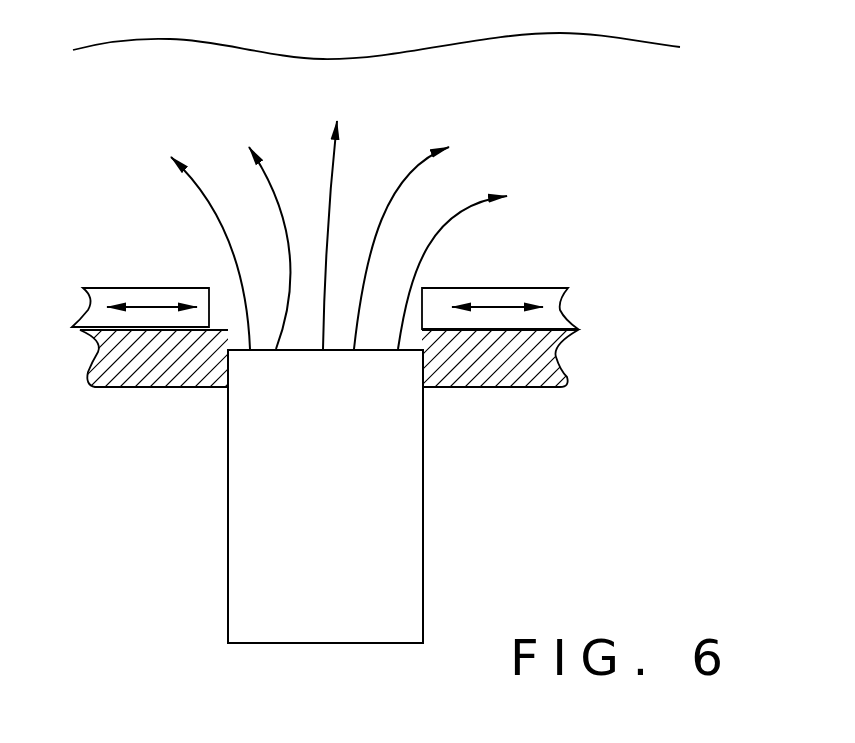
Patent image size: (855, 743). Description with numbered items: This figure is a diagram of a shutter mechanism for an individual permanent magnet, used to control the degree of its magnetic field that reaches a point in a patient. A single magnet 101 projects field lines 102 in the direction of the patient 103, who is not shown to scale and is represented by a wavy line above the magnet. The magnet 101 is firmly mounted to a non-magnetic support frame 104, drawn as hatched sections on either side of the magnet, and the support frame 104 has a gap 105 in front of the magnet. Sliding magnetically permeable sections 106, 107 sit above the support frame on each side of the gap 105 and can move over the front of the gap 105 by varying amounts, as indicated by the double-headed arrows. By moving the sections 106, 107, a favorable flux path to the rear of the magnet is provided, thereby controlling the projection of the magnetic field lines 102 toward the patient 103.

The magnet 101 is at (423, 562).
The field lines 102 is at (340, 153).
The patient 103 is at (376, 39).
The non-magnetic support frame 104 is at (160, 388).
The gap 105 is at (252, 342).
The sliding magnetically permeable section 106 is at (523, 287).
The sliding magnetically permeable section 107 is at (125, 288).